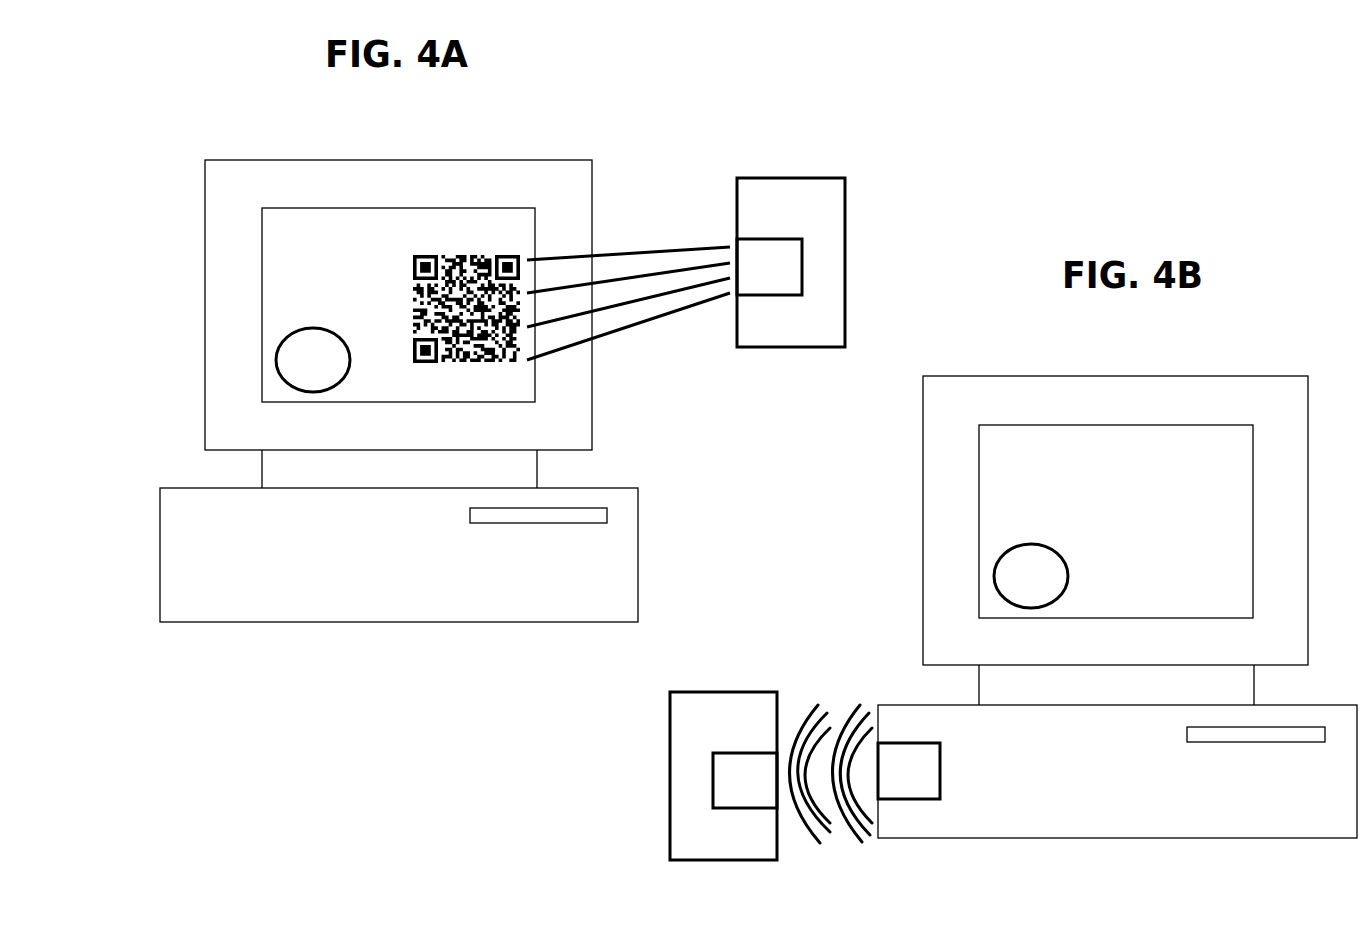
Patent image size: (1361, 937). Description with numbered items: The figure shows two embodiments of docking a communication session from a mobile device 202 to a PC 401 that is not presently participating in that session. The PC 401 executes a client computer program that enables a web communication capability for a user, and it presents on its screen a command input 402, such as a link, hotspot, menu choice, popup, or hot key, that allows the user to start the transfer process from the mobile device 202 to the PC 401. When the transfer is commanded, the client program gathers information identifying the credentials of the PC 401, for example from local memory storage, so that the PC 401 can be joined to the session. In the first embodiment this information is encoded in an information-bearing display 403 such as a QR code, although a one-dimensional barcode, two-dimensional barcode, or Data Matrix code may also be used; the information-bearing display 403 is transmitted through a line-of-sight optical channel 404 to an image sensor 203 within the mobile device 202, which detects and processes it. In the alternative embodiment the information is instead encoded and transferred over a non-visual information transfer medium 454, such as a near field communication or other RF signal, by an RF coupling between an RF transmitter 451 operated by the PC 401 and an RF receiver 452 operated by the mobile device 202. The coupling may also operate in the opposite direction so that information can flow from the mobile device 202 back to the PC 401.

In FIG. 4A, the PC 401 is at (399, 391).
In FIG. 4B, the PC 401 is at (1117, 607).
In FIG. 4A, the command input 402 is at (313, 360).
In FIG. 4B, the command input 402 is at (1031, 576).
In FIG. 4A, the information-bearing display 403 is at (413, 342).
In FIG. 4A, the line-of-sight optical channel 404 is at (620, 250).
In FIG. 4A, the mobile device 202 is at (791, 262).
In FIG. 4B, the mobile device 202 is at (723, 776).
In FIG. 4A, the image sensor 203 is at (769, 267).
In FIG. 4B, the RF transmitter 451 is at (909, 771).
In FIG. 4B, the RF receiver 452 is at (745, 780).
In FIG. 4B, the non-visual information transfer medium 454 is at (862, 716).